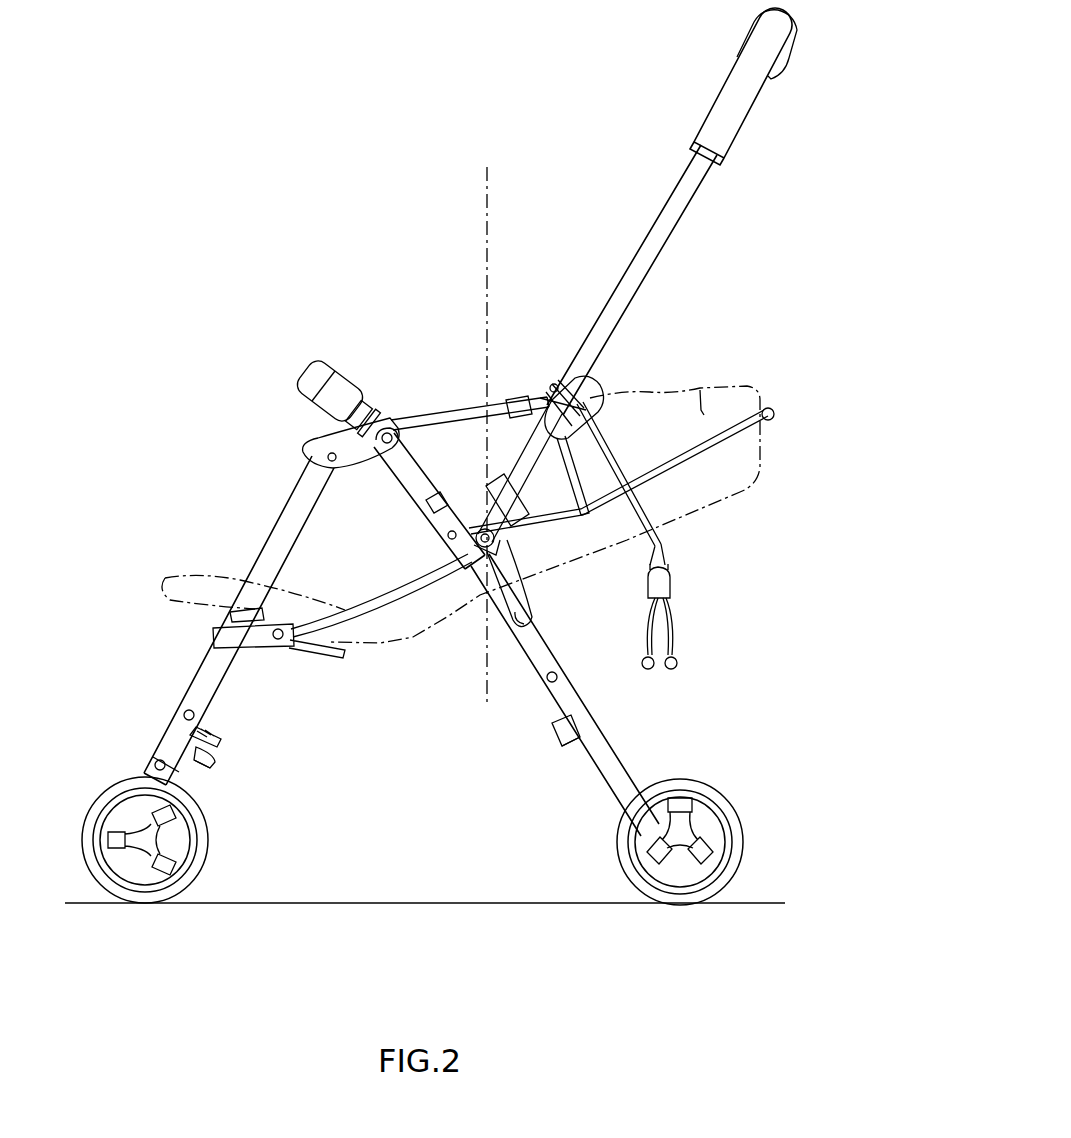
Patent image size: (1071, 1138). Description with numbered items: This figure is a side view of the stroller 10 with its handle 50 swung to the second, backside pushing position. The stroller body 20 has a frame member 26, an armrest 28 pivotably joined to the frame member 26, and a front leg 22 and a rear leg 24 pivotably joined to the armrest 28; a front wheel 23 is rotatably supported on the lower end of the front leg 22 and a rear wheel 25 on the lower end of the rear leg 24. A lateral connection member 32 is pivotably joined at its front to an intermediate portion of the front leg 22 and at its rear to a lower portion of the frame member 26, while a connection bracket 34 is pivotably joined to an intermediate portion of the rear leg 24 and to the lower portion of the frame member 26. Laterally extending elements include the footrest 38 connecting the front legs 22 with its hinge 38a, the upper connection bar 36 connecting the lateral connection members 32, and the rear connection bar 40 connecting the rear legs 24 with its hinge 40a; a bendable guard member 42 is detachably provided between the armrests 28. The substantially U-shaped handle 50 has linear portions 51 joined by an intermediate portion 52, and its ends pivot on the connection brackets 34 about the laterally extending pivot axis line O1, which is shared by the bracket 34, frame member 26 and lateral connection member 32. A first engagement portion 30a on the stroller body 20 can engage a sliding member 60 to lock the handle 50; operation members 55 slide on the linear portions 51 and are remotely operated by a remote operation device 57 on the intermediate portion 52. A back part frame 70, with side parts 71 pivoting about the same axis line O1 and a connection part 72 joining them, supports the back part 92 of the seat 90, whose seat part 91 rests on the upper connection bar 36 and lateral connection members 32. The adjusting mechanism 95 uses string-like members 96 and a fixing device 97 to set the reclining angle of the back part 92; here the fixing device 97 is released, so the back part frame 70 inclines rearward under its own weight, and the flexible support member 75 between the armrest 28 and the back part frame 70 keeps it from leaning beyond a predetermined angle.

The stroller 10 is at (309, 83).
The stroller body 20 is at (443, 282).
The front leg 22 is at (192, 688).
The front wheel 23 is at (205, 848).
The rear leg 24 is at (598, 730).
The rear wheel 25 is at (625, 846).
The frame member 26 is at (510, 400).
The armrest 28 is at (452, 420).
The first engagement portion 30a is at (386, 427).
The lateral connection member 32 is at (370, 585).
The connection bracket 34 is at (515, 600).
The upper connection bar 36 is at (278, 648).
The footrest (front connection bar) 38 is at (217, 752).
The hinge 38a is at (225, 765).
The rear connection bar 40 is at (555, 738).
The hinge 40a is at (566, 760).
The guard member 42 is at (306, 366).
The handle 50 is at (641, 194).
The linear portion 51 is at (628, 270).
The intermediate portion 52 is at (722, 96).
The operation member 55 is at (500, 495).
The remote operation device 57 is at (752, 34).
The sliding member 60 is at (600, 395).
The back part frame 70 is at (746, 451).
The side part 71 is at (660, 522).
The connection part 72 is at (775, 408).
The support member 75 is at (588, 517).
The seat 90 is at (735, 511).
The seat part 91 is at (187, 582).
The back part 92 is at (700, 390).
The adjusting mechanism 95 is at (640, 462).
The string-like member 96 is at (680, 640).
The fixing device 97 is at (672, 590).
The pivot axis line O1 is at (498, 540).